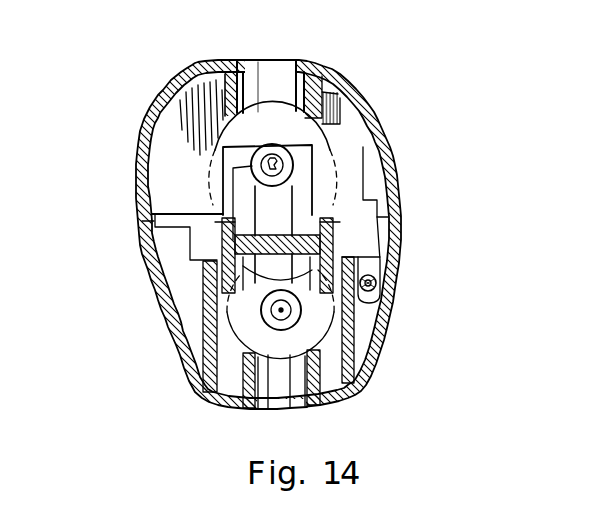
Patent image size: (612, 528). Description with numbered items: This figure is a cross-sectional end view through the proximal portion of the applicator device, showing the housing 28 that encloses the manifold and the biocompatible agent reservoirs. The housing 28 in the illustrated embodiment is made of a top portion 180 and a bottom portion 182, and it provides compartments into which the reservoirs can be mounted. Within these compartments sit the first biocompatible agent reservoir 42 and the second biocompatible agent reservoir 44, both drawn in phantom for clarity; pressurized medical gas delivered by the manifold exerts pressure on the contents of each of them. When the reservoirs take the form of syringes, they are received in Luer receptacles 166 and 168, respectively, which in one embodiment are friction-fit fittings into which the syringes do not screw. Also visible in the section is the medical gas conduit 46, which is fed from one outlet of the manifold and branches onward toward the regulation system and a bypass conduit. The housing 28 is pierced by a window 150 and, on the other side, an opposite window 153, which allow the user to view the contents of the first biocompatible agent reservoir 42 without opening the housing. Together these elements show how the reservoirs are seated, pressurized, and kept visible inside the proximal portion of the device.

The housing 28 is at (157, 107).
The second biocompatible agent reservoir 44 is at (377, 106).
The window 150 is at (279, 78).
The Luer receptacle 168 is at (292, 162).
The top portion 180 is at (137, 172).
The bottom portion 182 is at (152, 271).
The medical gas conduit 46 is at (378, 287).
The first biocompatible agent reservoir 42 is at (372, 340).
The Luer receptacle 166 is at (288, 316).
The opposite window 153 is at (289, 409).